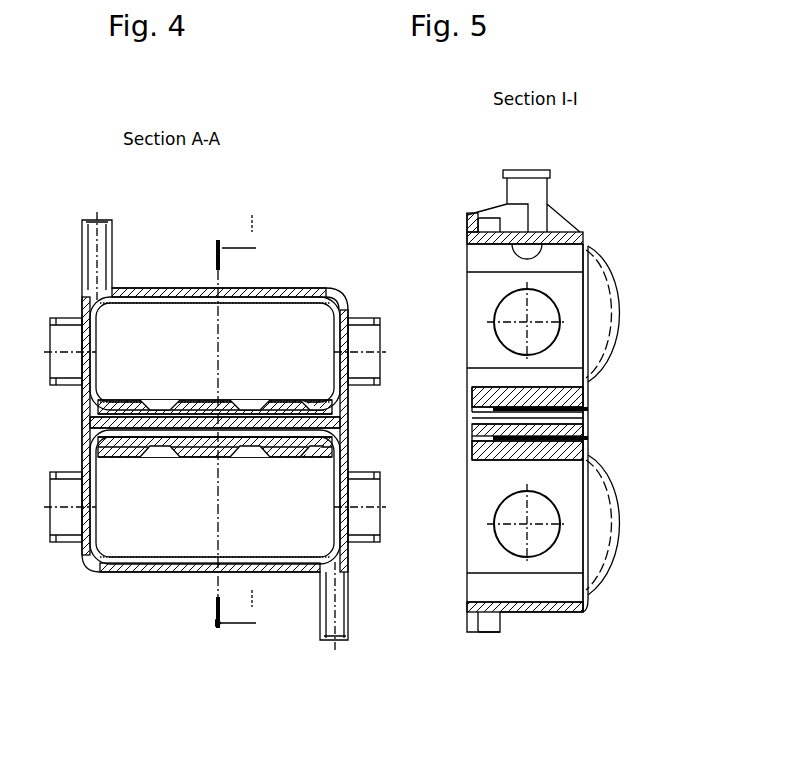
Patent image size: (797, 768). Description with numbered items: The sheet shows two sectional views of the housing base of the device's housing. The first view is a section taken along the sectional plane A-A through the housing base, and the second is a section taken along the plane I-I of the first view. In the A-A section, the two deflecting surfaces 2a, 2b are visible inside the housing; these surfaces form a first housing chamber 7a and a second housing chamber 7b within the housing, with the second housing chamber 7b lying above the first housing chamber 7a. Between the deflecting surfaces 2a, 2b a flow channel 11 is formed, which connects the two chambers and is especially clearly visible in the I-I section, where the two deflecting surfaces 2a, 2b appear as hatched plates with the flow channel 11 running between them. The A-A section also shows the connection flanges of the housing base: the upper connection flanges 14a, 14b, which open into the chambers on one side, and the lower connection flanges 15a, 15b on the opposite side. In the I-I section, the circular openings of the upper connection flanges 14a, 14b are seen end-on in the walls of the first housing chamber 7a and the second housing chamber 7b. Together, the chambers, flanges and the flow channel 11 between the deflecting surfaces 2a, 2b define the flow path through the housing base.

In FIG. 4, the deflecting surface 2a is at (165, 445).
In FIG. 5, the deflecting surface 2a is at (470, 458).
In FIG. 4, the deflecting surface 2b is at (183, 413).
In FIG. 5, the deflecting surface 2b is at (472, 388).
In FIG. 4, the first housing chamber 7a is at (182, 517).
In FIG. 4, the second housing chamber 7b is at (287, 330).
In FIG. 5, the flow channel 11 is at (498, 424).
In FIG. 4, the upper connection flange 14a is at (65, 517).
In FIG. 5, the upper connection flange 14a is at (537, 543).
In FIG. 4, the upper connection flange 14b is at (72, 330).
In FIG. 5, the upper connection flange 14b is at (535, 305).
In FIG. 4, the lower connection flange 15a is at (363, 517).
In FIG. 4, the lower connection flange 15b is at (367, 333).